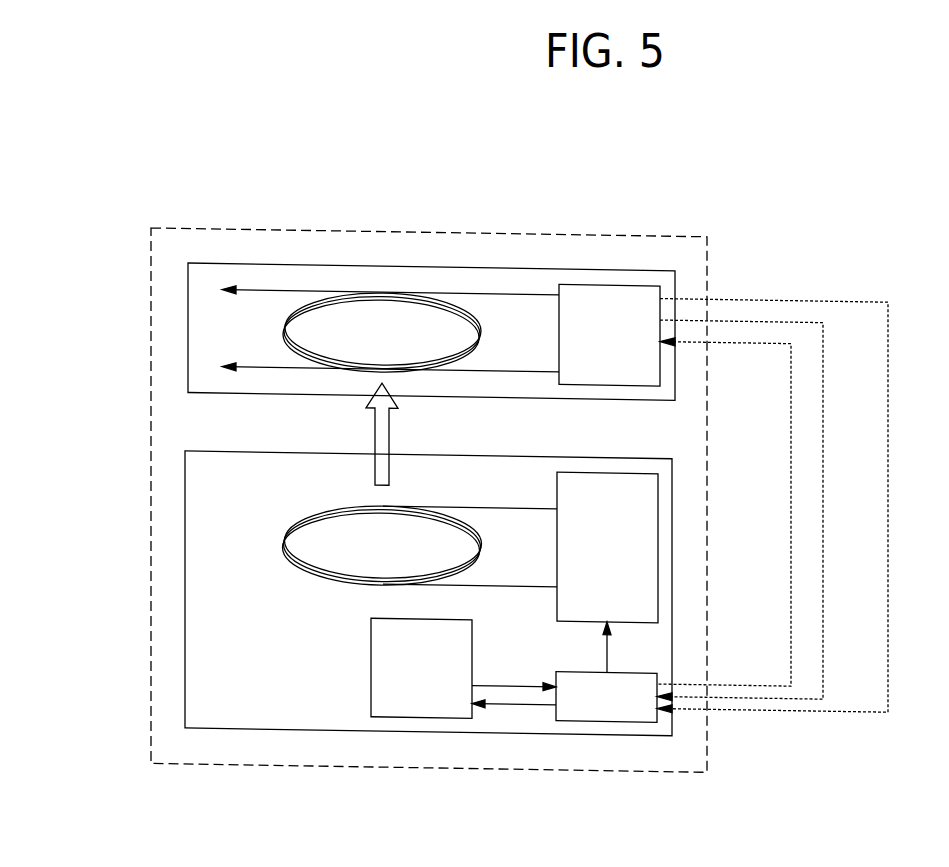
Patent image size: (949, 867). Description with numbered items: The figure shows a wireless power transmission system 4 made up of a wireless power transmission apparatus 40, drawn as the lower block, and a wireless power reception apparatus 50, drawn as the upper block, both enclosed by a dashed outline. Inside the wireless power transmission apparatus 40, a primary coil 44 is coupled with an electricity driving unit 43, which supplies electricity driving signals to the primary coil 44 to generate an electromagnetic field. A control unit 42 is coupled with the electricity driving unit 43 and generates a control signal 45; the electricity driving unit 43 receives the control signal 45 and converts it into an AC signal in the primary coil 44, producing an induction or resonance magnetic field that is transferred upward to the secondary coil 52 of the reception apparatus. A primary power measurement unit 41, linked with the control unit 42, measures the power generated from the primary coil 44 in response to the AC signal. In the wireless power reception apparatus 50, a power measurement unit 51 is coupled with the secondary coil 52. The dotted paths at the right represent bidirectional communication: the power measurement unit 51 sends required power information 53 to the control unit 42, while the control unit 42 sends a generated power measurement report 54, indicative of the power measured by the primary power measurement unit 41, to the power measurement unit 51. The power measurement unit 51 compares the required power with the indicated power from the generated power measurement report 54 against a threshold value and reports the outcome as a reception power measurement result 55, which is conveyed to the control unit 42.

The wireless power transmission system 4 is at (622, 763).
The wireless power transmission apparatus 40 is at (527, 728).
The primary power measurement unit 41 is at (421, 668).
The control unit 42 is at (606, 697).
The electricity driving unit 43 is at (607, 547).
The primary coil 44 is at (288, 555).
The control signal 45 is at (605, 640).
The wireless power reception apparatus 50 is at (500, 260).
The power measurement unit 51 is at (594, 342).
The secondary coil 52 is at (480, 339).
The required power information 53 is at (823, 442).
The generated power measurement report 54 is at (791, 430).
The reception power measurement result 55 is at (888, 438).